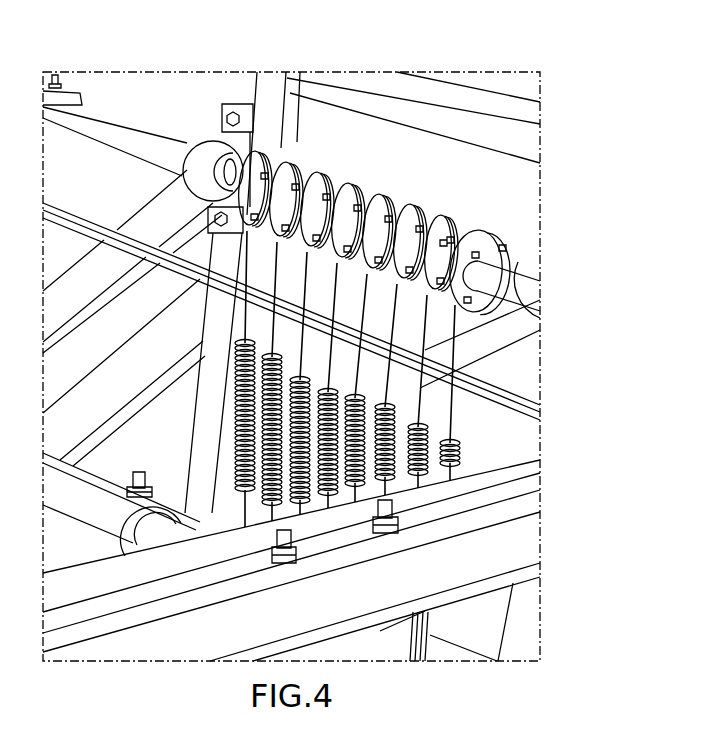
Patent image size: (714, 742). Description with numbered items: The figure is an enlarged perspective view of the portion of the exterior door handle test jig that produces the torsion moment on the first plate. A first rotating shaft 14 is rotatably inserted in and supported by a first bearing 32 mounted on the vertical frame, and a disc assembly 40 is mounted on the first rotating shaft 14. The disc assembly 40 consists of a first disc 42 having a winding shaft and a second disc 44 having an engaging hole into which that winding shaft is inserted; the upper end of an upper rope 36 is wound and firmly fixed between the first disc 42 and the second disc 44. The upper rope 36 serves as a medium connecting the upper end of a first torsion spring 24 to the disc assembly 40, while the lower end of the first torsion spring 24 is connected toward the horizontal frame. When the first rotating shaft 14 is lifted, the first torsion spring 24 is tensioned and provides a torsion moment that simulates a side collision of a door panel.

The first rotating shaft 14 is at (520, 272).
The first torsion spring 24 is at (470, 437).
The first bearing 32 is at (208, 137).
The upper rope 36 is at (467, 326).
The disc assembly 40 is at (440, 233).
The first disc 42 is at (467, 223).
The second disc 44 is at (490, 229).